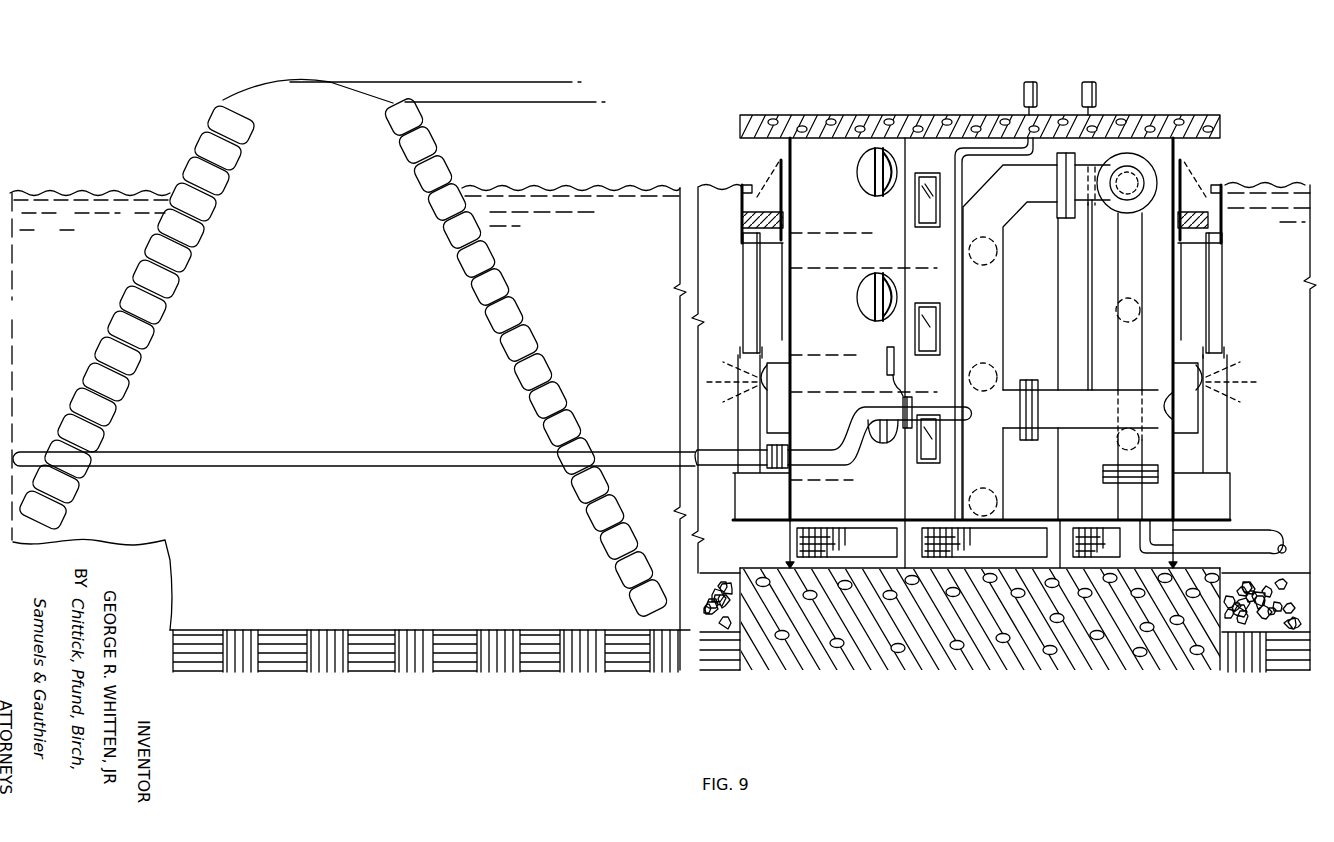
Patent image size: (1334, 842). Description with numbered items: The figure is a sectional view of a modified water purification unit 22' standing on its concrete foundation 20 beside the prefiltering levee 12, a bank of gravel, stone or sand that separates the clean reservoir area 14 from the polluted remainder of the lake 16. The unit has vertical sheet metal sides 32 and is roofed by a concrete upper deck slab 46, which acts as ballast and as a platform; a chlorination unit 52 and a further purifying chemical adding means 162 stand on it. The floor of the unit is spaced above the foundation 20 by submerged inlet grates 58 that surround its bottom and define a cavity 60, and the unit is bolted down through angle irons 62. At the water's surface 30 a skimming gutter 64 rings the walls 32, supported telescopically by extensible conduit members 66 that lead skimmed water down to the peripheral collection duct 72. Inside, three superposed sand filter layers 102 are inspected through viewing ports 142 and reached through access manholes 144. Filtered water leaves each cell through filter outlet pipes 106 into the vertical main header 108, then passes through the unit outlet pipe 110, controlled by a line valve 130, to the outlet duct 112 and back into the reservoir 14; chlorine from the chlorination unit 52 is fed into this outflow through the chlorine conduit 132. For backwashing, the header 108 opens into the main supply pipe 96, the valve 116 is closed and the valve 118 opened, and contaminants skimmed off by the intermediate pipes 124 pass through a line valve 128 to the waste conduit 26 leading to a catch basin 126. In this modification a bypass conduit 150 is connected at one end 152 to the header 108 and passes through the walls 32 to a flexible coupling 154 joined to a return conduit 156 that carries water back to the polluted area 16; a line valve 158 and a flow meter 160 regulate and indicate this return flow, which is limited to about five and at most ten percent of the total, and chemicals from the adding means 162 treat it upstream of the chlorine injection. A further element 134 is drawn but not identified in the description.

The prefiltering levee 12 is at (288, 93).
The reservoir area 14 is at (592, 257).
The remainder of the lake 16 is at (78, 266).
The foundation 20 is at (1112, 664).
The modified water purification unit 22' is at (839, 86).
The underground waste conduit 26 is at (1254, 540).
The water's surface 30 is at (1262, 186).
The vertical sheet metal sides 32 is at (553, 188).
The upper deck slab 46 is at (1222, 128).
The chlorination unit 52 is at (1098, 94).
The submerged inlet grates 58 is at (865, 568).
The cavity 60 is at (1035, 553).
The angle irons 62 is at (790, 565).
The skimming gutter 64 is at (742, 210).
The extensible conduit members 66 is at (747, 262).
The peripheral skimmed water collection duct 72 is at (748, 499).
The main supply pipe 96 is at (1128, 166).
The filter layers 102 is at (838, 261).
The filter outlet pipes 106 is at (997, 251).
The main header pipe 108 is at (1003, 272).
The unit outlet pipe 110 is at (1046, 432).
The outlet duct 112 is at (1195, 420).
The line valve 116 is at (1146, 198).
The valve 118 is at (1058, 215).
The intermediate pipes 124 is at (1134, 304).
The catch basin 126 is at (1130, 362).
The line valve 128 is at (1103, 472).
The line valve 130 is at (1025, 382).
The chlorine conduit 132 is at (1088, 298).
The nozzle 134 is at (1215, 400).
The viewing ports 142 is at (935, 161).
The filter cell access manholes 144 is at (858, 172).
The bypass conduit 150 is at (843, 458).
The end of bypass conduit 152 is at (968, 415).
The flexible coupling 154 is at (780, 440).
The return conduit 156 is at (318, 452).
The line valve 158 is at (905, 428).
The flow meter 160 is at (887, 365).
The purifying chemical adding means 162 is at (1024, 95).